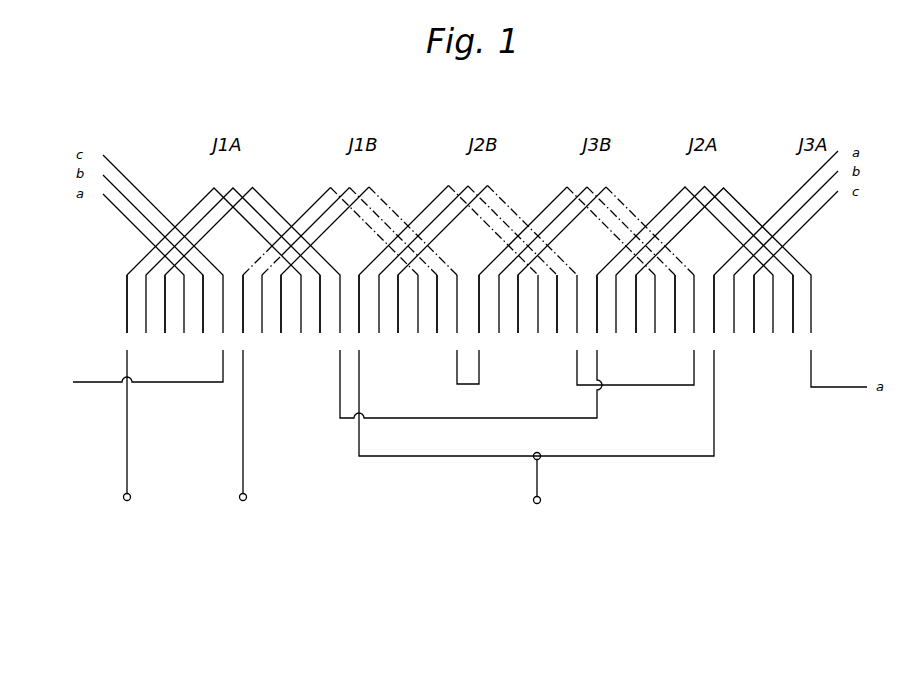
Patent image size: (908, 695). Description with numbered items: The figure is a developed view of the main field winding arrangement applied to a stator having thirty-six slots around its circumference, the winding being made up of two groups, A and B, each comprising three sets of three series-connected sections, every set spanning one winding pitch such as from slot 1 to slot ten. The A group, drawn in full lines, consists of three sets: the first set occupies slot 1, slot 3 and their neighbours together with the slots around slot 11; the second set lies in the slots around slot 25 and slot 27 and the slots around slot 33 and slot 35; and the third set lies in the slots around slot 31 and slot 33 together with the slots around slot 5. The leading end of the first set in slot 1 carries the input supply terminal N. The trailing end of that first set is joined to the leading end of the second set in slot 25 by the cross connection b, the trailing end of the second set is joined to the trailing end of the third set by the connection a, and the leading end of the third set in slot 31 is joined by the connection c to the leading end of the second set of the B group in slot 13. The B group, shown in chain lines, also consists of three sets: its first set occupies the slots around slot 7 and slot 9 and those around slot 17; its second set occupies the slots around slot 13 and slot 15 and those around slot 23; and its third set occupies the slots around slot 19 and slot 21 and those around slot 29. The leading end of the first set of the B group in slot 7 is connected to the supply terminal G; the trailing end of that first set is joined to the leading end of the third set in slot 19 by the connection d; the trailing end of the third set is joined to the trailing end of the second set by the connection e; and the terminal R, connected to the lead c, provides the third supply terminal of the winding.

The slot 1 is at (127, 312).
The slot 3 is at (165, 312).
The slot 5 is at (203, 312).
The slot 7 is at (243, 312).
The slot 9 is at (281, 312).
The slot 11 is at (320, 312).
The slot 13 is at (359, 312).
The slot 15 is at (398, 312).
The slot 17 is at (437, 312).
The slot 19 is at (479, 312).
The slot 21 is at (518, 312).
The slot 23 is at (557, 312).
The slot 25 is at (597, 312).
The slot 27 is at (636, 312).
The slot 29 is at (675, 312).
The slot 31 is at (714, 312).
The slot 33 is at (754, 312).
The slot 35 is at (793, 312).
The connection a is at (134, 369).
The cross connection b is at (471, 384).
The connection c is at (536, 403).
The connection d is at (468, 367).
The connection e is at (635, 367).
The input supply terminal N is at (124, 438).
The supply terminal G is at (241, 438).
The terminal R is at (535, 491).